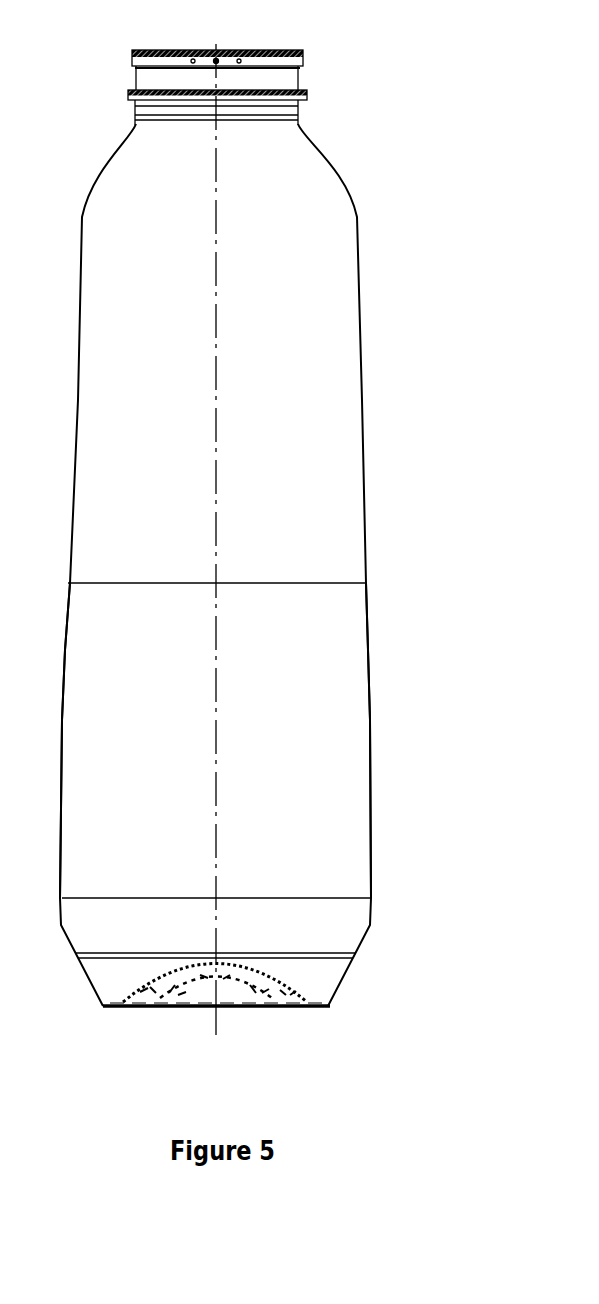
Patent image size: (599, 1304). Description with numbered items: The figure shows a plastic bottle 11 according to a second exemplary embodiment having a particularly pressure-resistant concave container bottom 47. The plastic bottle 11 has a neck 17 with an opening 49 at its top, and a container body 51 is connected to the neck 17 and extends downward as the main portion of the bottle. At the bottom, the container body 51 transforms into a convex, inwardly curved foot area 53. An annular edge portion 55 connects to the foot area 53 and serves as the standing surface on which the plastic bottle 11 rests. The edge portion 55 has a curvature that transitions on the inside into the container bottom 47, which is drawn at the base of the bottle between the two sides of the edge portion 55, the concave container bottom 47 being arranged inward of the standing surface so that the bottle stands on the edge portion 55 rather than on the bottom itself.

The plastic bottle 11 is at (412, 330).
The neck 17 is at (300, 78).
The opening 49 is at (255, 50).
The container body 51 is at (368, 673).
The foot area 53 is at (358, 962).
The edge portion 55 is at (115, 1008).
The container bottom 47 is at (270, 1023).